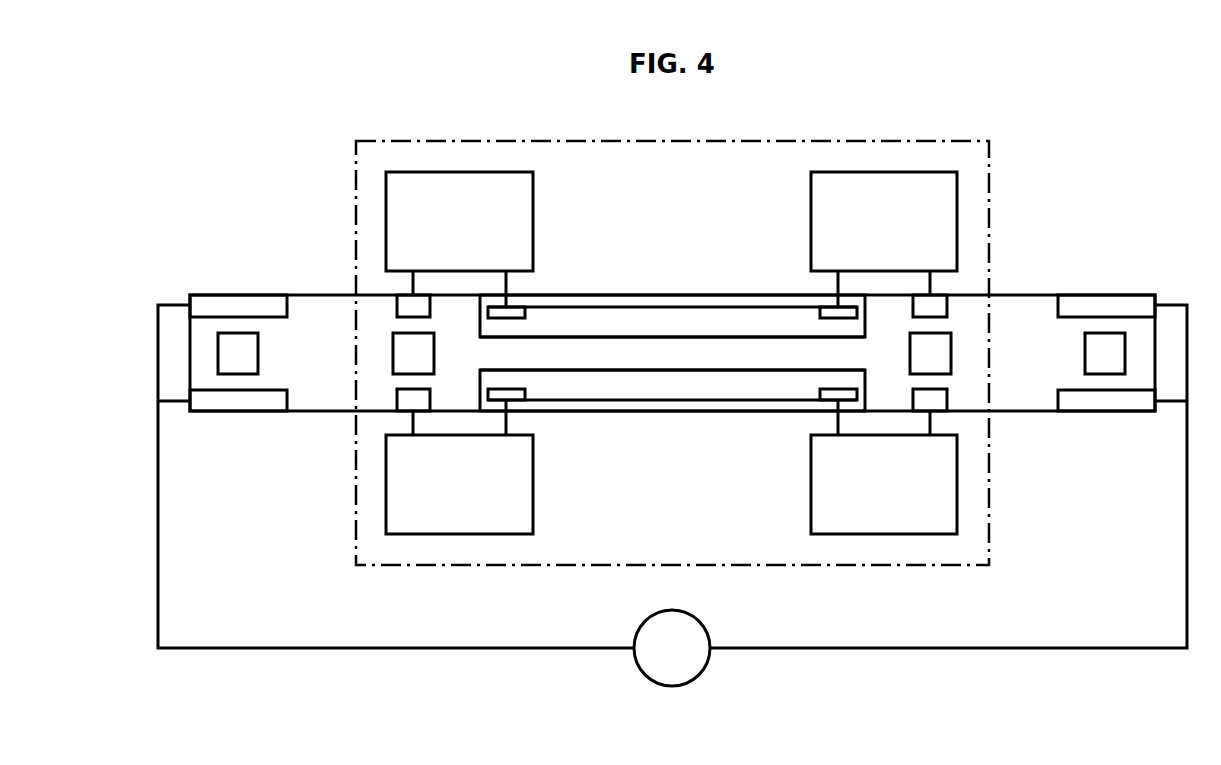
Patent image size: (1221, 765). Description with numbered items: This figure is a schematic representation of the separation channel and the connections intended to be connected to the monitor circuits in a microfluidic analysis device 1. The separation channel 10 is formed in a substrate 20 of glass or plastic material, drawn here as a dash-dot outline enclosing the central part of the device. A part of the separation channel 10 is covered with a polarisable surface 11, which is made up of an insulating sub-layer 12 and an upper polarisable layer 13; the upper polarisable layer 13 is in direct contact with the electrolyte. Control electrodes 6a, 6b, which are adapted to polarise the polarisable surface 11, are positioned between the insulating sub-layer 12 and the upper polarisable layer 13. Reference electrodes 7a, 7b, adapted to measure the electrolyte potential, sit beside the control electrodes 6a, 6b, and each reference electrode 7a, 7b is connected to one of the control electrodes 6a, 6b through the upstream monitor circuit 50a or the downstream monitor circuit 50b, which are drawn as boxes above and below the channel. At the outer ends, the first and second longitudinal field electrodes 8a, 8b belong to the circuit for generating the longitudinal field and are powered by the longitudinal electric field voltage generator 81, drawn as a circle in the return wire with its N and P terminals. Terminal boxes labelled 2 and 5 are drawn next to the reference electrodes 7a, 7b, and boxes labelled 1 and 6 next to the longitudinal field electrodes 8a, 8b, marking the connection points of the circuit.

The microfluidic analysis device 1 is at (232, 364).
The second terminal 2 is at (420, 364).
The third terminal 5 is at (937, 364).
The fourth terminal 6 is at (1112, 364).
The control electrode 6a is at (518, 312).
The control electrode 6b is at (824, 312).
The reference electrode 7a is at (400, 307).
The reference electrode 7b is at (940, 305).
The first longitudinal field electrode 8a is at (235, 306).
The second longitudinal field electrode 8b is at (1108, 305).
The separation channel 10 is at (672, 353).
The polarisable surface 11 is at (708, 420).
The insulating sub-layer 12 is at (617, 407).
The upper polarisable layer 13 is at (672, 383).
The substrate 20 is at (765, 168).
The upstream monitor circuit 50a is at (442, 231).
The downstream monitor circuit 50b is at (867, 231).
The longitudinal electric field voltage generator 81 is at (672, 663).